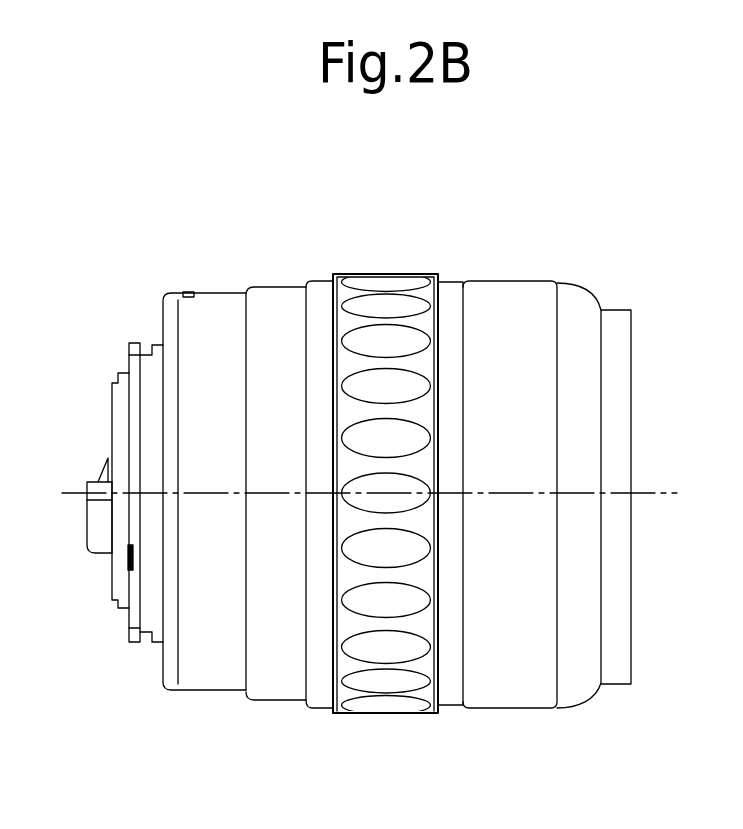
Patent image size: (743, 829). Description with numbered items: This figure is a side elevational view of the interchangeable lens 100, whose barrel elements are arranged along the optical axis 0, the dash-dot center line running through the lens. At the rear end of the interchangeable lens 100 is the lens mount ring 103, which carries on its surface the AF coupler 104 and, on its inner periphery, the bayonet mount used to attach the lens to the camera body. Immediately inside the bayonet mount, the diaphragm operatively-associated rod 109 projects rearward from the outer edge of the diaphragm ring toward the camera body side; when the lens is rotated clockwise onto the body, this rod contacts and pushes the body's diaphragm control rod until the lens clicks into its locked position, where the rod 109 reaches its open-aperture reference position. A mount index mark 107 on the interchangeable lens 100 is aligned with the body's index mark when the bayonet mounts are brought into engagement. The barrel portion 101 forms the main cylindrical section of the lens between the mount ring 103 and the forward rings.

The optical axis 0 is at (657, 494).
The interchangeable lens 100 is at (498, 258).
The fixed barrel 101 is at (203, 660).
The lens mount ring 103 is at (163, 327).
The AF coupler 104 is at (135, 540).
The mount index mark 107 is at (189, 292).
The diaphragm operatively-associated rod 109 is at (98, 480).